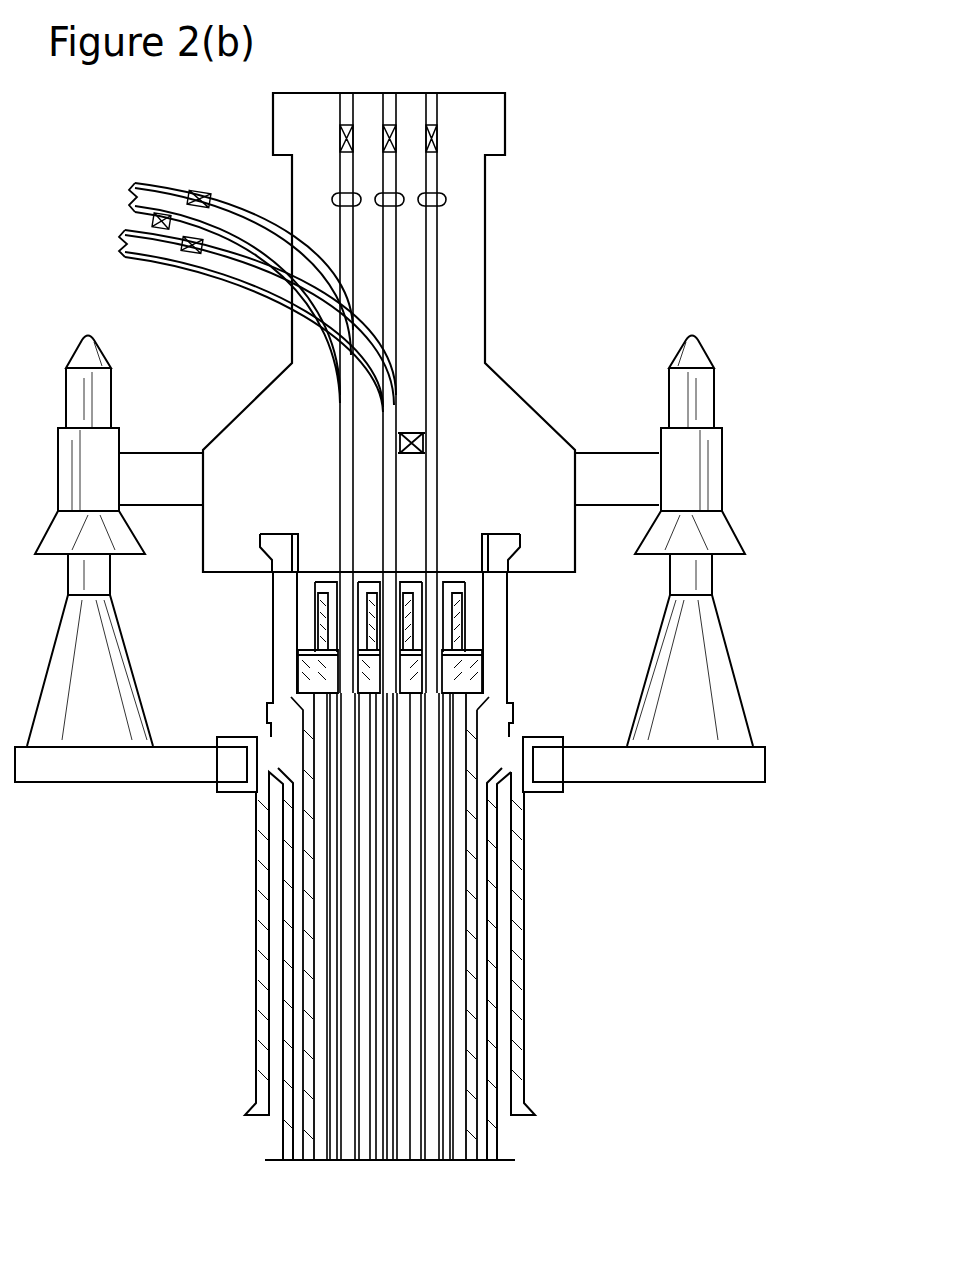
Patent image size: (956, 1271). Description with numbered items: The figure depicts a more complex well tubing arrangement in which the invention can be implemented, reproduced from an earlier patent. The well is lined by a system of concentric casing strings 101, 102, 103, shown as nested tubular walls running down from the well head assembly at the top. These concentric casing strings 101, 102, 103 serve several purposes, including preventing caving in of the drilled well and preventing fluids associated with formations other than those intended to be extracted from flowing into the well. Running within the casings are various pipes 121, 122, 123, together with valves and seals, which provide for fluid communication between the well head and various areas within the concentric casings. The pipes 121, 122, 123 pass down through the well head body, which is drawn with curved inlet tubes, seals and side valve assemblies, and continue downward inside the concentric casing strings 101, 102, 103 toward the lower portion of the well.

The casing string 101 is at (517, 862).
The casing string 102 is at (490, 941).
The casing string 103 is at (470, 1135).
The pipe 121 is at (340, 955).
The pipe 122 is at (380, 907).
The pipe 123 is at (438, 1002).